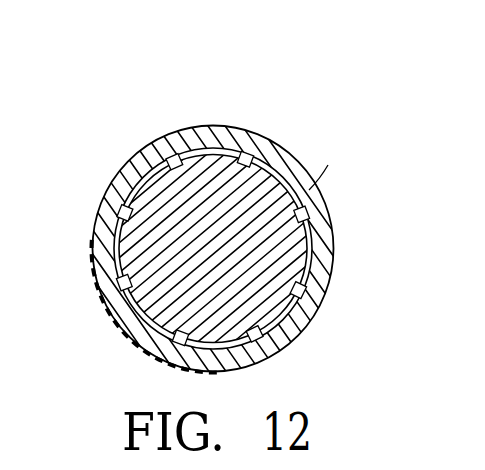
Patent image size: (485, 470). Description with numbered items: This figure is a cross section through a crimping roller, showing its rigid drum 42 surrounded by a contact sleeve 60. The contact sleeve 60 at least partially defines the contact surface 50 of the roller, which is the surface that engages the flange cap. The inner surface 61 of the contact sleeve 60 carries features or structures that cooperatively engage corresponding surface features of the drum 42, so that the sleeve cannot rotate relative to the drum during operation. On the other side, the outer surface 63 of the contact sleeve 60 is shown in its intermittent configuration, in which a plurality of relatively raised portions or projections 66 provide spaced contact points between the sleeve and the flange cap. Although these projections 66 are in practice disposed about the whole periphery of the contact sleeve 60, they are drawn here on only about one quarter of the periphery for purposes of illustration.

The contact surface 50 is at (118, 168).
The contact sleeve 60 is at (276, 160).
The outer surface 63 is at (323, 176).
The inner surface 61 is at (211, 165).
The rigid drum 42 is at (309, 322).
The projections 66 is at (93, 265).